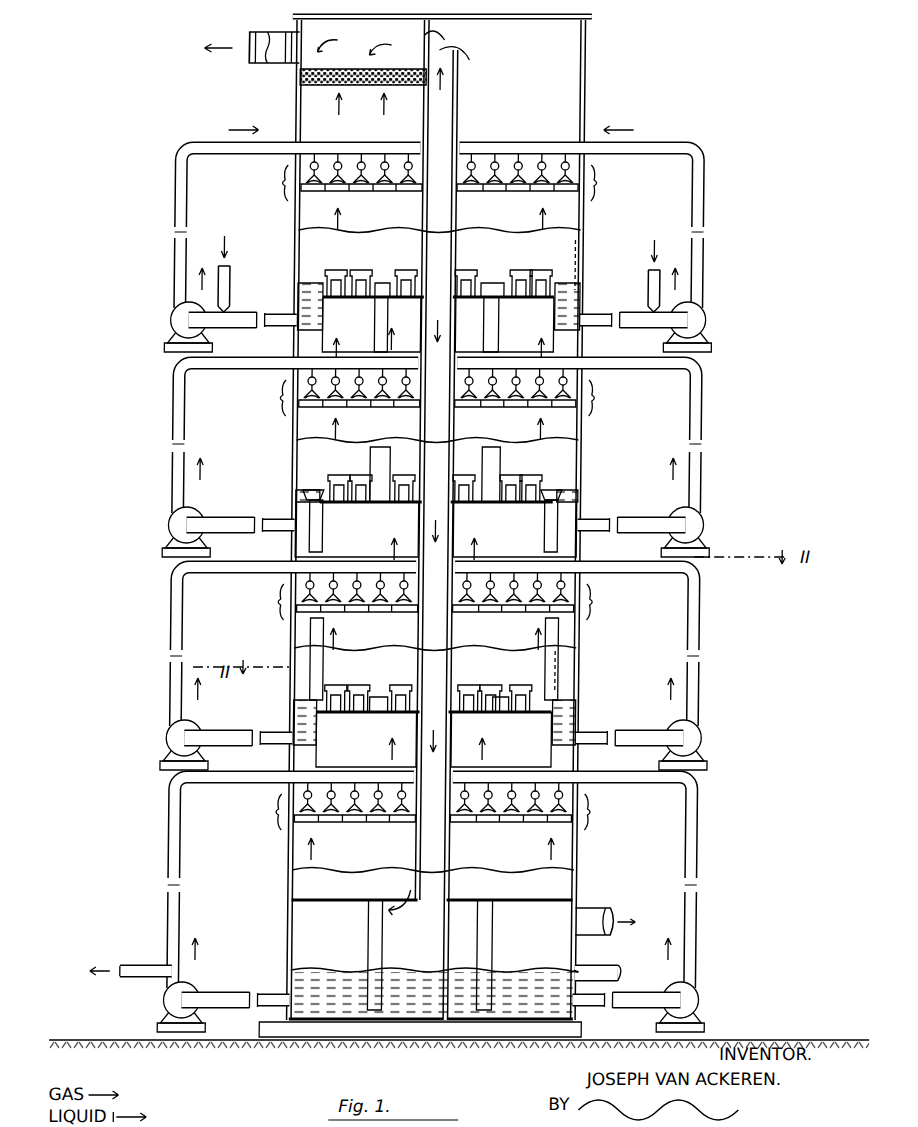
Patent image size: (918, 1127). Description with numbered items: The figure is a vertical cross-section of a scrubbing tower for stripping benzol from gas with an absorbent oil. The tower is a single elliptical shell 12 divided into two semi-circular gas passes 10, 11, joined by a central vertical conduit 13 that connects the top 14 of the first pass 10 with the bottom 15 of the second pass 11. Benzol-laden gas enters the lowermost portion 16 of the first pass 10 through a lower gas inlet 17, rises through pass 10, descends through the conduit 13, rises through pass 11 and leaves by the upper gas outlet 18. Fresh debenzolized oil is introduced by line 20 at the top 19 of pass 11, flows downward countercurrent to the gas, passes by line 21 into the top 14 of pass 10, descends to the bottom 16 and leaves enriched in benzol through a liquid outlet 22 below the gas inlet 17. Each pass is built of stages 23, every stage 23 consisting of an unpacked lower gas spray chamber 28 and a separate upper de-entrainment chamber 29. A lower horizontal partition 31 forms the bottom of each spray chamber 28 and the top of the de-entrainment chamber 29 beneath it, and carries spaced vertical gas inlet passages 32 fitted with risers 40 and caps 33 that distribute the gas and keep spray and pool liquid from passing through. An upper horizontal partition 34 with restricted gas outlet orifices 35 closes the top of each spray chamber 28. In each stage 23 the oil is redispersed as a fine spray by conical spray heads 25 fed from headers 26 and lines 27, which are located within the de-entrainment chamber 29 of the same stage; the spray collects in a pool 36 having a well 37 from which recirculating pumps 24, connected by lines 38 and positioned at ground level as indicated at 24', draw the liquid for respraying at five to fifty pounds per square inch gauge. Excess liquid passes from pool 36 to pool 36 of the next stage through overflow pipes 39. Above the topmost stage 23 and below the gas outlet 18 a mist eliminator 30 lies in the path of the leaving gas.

The first gas pass 10 is at (588, 442).
The second gas pass 11 is at (300, 452).
The elliptical shell 12 is at (585, 450).
The central vertical conduit 13 is at (458, 97).
The top of pass 10 14 is at (583, 72).
The bottom of pass 11 15 is at (300, 947).
The lowermost portion of pass 10 16 is at (583, 964).
The lower gas inlet 17 is at (610, 911).
The upper gas outlet 18 is at (270, 32).
The top of pass 11 19 is at (299, 102).
The oil feed line 20 is at (254, 268).
The oil transfer line 21 is at (645, 274).
The liquid outlet 22 is at (628, 976).
The stage 23 is at (453, 491).
The recirculating pump 24 is at (448, 662).
The ground level pump location 24' is at (463, 702).
The conical spray head 25 is at (405, 166).
The spray header 26 is at (494, 166).
The recirculation line 27 is at (338, 146).
The lower gas spray chamber 28 is at (575, 235).
The spray de-entrainment chamber 29 is at (582, 105).
The mist eliminator 30 is at (397, 70).
The lower horizontal partition 31 is at (368, 290).
The vertical gas inlet passage 32 is at (356, 298).
The cap 33 is at (367, 687).
The upper horizontal partition 34 is at (345, 405).
The gas outlet orifice 35 is at (372, 405).
The pool 36 is at (510, 271).
The sump or well 37 is at (302, 291).
The pump suction line 38 is at (270, 318).
The overflow pipe 39 is at (378, 342).
The riser 40 is at (549, 484).